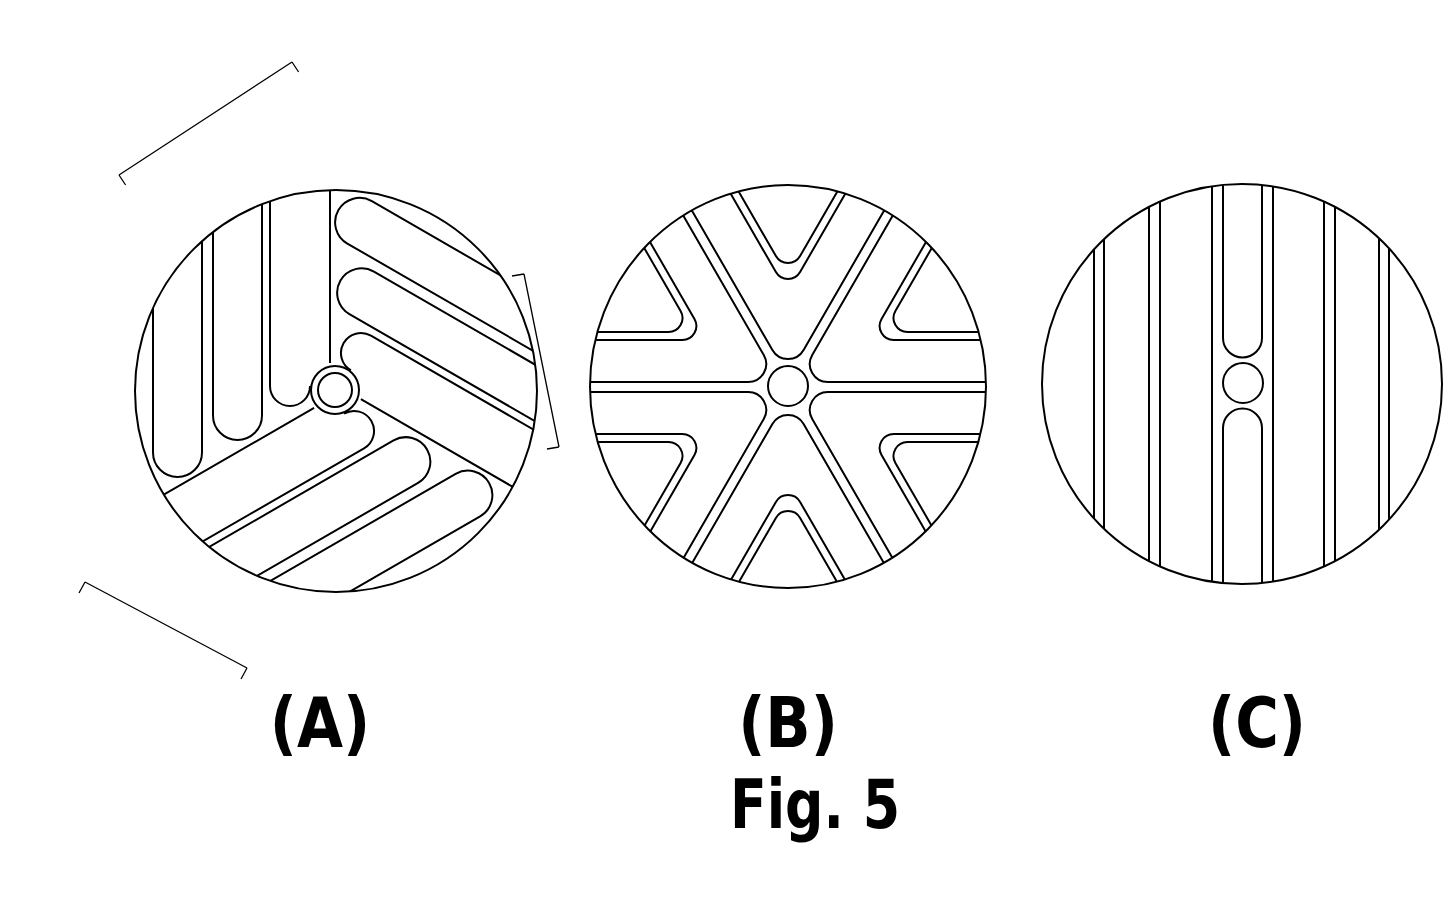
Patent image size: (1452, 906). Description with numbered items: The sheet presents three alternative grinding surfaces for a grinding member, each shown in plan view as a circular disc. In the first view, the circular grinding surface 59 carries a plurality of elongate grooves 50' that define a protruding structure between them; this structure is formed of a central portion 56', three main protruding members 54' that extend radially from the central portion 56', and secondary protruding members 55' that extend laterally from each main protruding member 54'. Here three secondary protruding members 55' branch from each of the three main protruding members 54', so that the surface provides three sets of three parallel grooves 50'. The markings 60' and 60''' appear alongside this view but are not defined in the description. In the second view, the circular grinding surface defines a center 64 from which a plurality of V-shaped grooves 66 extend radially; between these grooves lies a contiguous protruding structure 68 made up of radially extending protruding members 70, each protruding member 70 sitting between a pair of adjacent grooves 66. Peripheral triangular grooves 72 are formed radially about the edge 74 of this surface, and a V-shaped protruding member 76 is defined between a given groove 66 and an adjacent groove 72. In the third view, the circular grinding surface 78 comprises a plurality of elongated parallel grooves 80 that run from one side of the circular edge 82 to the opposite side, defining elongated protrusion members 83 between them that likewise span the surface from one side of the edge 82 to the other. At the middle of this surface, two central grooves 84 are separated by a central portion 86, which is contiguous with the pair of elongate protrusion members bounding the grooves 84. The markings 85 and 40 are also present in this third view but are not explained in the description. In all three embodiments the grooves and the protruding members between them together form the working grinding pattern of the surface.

In FIG. 5A, the elongate grooves 50' is at (338, 418).
In FIG. 5A, the main protruding members 54' is at (351, 354).
In FIG. 5A, the secondary protruding members 55' is at (398, 404).
In FIG. 5A, the central portion 56' is at (267, 304).
In FIG. 5A, the circular grinding surface 59 is at (463, 174).
In FIG. 5A, the width dimension 60' is at (328, 461).
In FIG. 5A, the width dimension 60''' is at (209, 118).
In FIG. 5B, the center 64 is at (684, 222).
In FIG. 5B, the V-shaped grooves 66 is at (861, 219).
In FIG. 5B, the contiguous protruding structure 68 is at (740, 380).
In FIG. 5B, the radially extending protruding members 70 is at (706, 230).
In FIG. 5B, the peripheral triangular grooves 72 is at (640, 290).
In FIG. 5B, the edge 74 is at (894, 256).
In FIG. 5B, the V-shaped protruding member 76 is at (818, 256).
In FIG. 5B, the circular grinding surface 78 is at (782, 196).
In FIG. 5C, the circular grinding surface 78 is at (1345, 151).
In FIG. 5B, the circular edge 82 is at (907, 132).
In FIG. 5C, the circular edge 82 is at (1290, 588).
In FIG. 5C, the elongated parallel grooves 80 is at (1126, 222).
In FIG. 5C, the elongated protrusion members 83 is at (1092, 382).
In FIG. 5C, the central grooves 84 is at (1243, 196).
In FIG. 5C, the slot 85 is at (1276, 346).
In FIG. 5C, the central portion 86 is at (1222, 410).
In FIG. 5C, the central channel 40 is at (1243, 428).